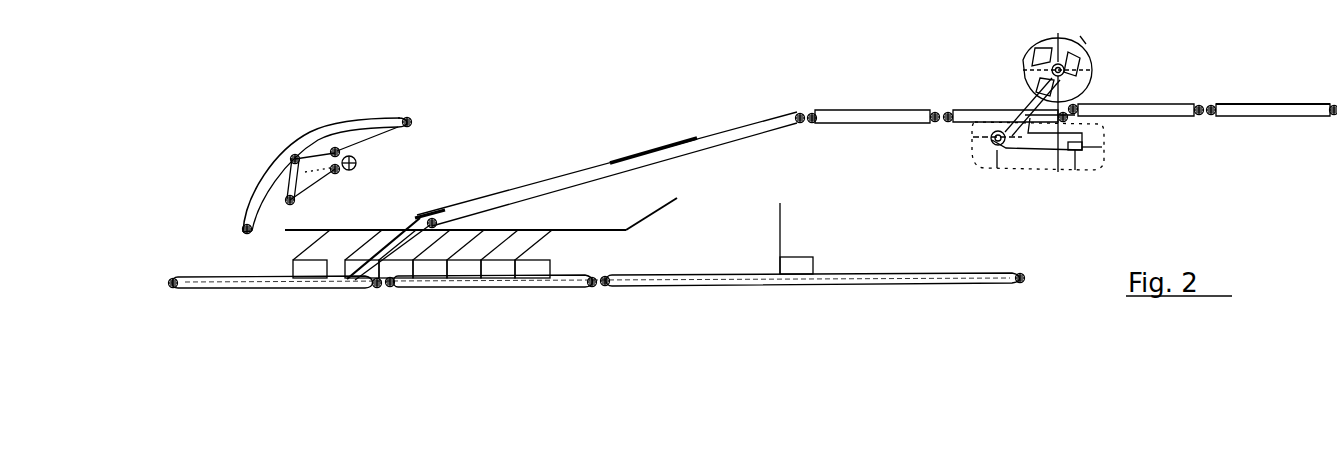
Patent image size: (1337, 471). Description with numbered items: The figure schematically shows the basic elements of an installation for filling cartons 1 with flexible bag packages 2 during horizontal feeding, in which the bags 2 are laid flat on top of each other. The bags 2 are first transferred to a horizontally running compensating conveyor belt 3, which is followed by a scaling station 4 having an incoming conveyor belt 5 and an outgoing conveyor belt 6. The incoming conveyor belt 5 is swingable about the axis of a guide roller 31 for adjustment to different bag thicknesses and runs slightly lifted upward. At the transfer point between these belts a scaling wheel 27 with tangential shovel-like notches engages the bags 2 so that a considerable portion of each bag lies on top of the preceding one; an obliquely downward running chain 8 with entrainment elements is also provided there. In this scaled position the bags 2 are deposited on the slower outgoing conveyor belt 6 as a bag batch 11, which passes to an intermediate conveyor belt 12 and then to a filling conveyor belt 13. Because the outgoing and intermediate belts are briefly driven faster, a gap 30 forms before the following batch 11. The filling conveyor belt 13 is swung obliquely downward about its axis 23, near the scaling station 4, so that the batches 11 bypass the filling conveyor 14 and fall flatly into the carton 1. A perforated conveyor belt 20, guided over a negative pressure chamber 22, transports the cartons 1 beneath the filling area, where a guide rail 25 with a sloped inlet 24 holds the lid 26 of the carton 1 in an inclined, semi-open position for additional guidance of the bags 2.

The carton 1 is at (310, 270).
The flexible bag package 2 is at (1243, 103).
The compensating conveyor belt 3 is at (1270, 118).
The scaling station 4 is at (1054, 91).
The incoming conveyor belt 5 is at (1157, 118).
The outgoing conveyor belt 6 is at (960, 122).
The chain 8 is at (1060, 170).
The bag batch 11 is at (647, 136).
The intermediate conveyor belt 12 is at (882, 125).
The filling conveyor belt 13 is at (538, 188).
The filling conveyor 14 is at (282, 130).
The conveyor belt 20 is at (200, 276).
The negative pressure chamber 22 is at (258, 292).
The axis 23 is at (800, 125).
The sloped inlet 24 is at (660, 205).
The guide rail 25 is at (360, 229).
The lid 26 is at (548, 235).
The scaling wheel 27 is at (1094, 55).
The gap 30 is at (935, 100).
The guide roller 31 is at (1201, 118).